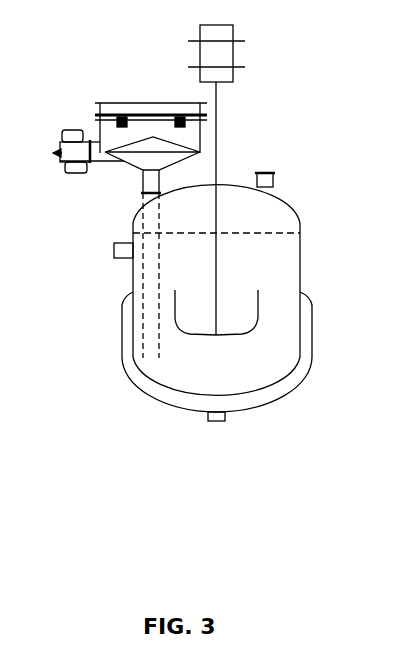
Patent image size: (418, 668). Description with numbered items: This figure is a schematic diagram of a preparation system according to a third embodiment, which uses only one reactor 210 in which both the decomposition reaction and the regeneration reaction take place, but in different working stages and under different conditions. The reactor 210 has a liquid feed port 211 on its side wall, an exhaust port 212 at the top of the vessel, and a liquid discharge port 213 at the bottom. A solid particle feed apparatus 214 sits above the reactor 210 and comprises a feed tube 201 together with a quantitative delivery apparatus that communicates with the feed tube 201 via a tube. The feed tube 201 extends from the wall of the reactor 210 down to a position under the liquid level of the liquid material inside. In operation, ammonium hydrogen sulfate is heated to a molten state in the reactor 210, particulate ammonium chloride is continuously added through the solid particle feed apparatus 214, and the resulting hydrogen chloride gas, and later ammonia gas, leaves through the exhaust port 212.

The reactor 210 is at (244, 230).
The feed tube 201 is at (141, 217).
The solid particle feed apparatus 214 is at (113, 102).
The exhaust port 212 is at (273, 182).
The liquid feed port 211 is at (113, 250).
The liquid discharge port 213 is at (206, 415).